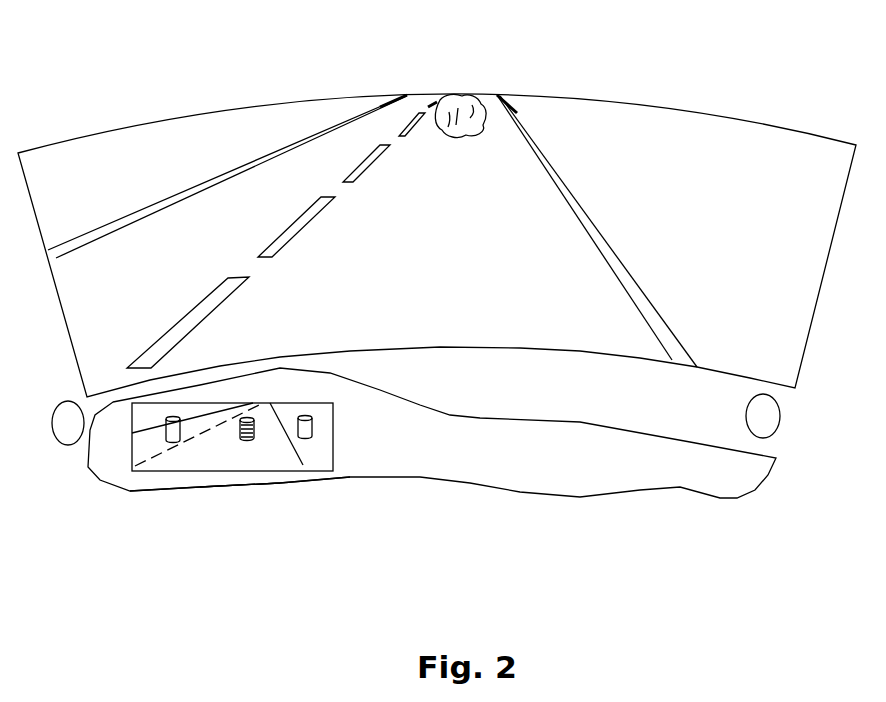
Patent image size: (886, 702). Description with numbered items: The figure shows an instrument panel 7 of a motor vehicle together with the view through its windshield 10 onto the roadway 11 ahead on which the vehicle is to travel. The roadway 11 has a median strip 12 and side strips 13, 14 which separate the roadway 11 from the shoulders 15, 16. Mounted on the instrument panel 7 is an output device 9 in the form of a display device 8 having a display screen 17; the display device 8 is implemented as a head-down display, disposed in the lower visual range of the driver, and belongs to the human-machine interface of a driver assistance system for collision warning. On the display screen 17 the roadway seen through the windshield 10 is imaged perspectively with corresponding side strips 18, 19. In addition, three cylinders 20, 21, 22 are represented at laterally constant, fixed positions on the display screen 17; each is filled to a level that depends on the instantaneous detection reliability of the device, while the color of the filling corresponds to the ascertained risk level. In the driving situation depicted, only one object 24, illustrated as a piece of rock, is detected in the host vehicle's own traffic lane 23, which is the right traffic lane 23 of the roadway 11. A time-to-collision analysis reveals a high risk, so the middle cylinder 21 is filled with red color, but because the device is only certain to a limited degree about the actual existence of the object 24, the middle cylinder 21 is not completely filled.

The instrument panel 7 is at (475, 453).
The display device 8 is at (340, 488).
The output device 9 is at (235, 507).
The windshield 10 is at (752, 105).
The roadway 11 is at (318, 282).
The median strip 12 is at (367, 157).
The side strip 13 is at (170, 203).
The side strip 14 is at (558, 180).
The shoulder 15 is at (252, 163).
The shoulder 16 is at (598, 242).
The display screen 17 is at (262, 473).
The side strip 18 is at (200, 417).
The side strip 19 is at (299, 455).
The cylinder 20 is at (173, 443).
The middle cylinder 21 is at (243, 442).
The cylinder 22 is at (305, 440).
The traffic lane 23 is at (505, 157).
The object 24 is at (452, 110).